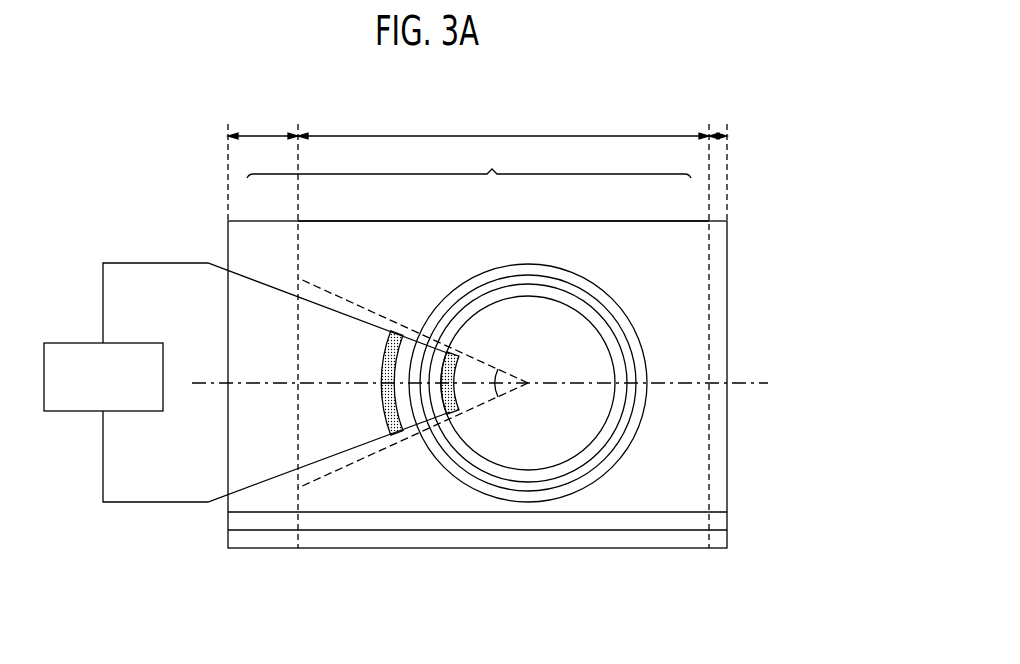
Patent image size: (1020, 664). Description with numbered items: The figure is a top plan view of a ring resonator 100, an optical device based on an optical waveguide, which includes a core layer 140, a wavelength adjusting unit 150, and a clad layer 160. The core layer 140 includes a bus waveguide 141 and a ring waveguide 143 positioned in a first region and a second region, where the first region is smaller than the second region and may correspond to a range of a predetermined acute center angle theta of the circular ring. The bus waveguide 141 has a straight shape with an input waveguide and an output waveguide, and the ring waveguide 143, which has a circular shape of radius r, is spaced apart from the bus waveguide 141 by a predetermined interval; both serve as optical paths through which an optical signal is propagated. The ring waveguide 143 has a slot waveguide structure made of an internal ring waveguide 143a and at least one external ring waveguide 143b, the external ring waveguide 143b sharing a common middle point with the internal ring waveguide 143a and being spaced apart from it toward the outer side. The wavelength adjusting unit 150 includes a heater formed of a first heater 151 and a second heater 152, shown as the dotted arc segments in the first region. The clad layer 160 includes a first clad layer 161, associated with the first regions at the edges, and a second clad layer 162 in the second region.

The ring resonator 100 is at (833, 83).
The core layer 140 is at (848, 435).
The bus waveguide 141 is at (718, 522).
The ring waveguide 143 is at (628, 383).
The internal ring waveguide 143a is at (615, 415).
The external ring waveguide 143b is at (613, 457).
The wavelength adjusting unit 150 is at (432, 476).
The first heater 151 is at (397, 432).
The second heater 152 is at (456, 414).
The clad layer 160 is at (469, 163).
The first clad layer 161 is at (272, 235).
The second clad layer 162 is at (458, 236).